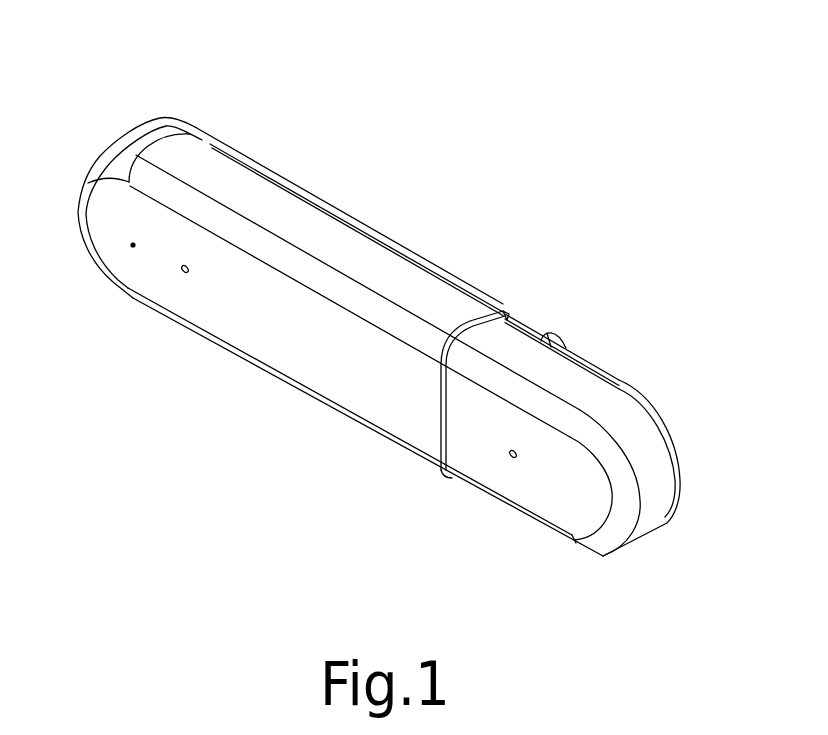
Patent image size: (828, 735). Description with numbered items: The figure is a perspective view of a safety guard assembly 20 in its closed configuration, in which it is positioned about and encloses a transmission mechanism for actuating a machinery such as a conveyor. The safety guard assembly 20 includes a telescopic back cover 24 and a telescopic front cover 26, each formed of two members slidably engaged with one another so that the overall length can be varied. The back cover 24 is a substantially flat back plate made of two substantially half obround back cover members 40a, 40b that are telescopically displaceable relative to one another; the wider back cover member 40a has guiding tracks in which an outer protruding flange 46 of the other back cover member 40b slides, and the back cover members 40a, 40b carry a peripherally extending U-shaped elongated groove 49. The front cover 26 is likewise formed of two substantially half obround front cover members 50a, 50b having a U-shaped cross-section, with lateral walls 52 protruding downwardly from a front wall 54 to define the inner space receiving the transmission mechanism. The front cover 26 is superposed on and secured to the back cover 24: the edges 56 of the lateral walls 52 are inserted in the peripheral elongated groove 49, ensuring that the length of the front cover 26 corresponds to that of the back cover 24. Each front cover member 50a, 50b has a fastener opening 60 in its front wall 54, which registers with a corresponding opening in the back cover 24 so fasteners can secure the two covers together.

The safety guard assembly 20 is at (203, 457).
The telescopic back cover 24 is at (399, 244).
The telescopic front cover 26 is at (208, 266).
The back cover member 40a is at (203, 129).
The back cover member 40b is at (624, 391).
The outer protruding flange 46 is at (553, 332).
The U-shaped elongated groove 49 is at (475, 297).
The front cover member 50a is at (133, 245).
The front cover member 50b is at (575, 493).
The lateral walls 52 is at (330, 235).
The front wall 54 is at (368, 390).
The edges 56 is at (504, 313).
The fastener opening 60 is at (183, 272).